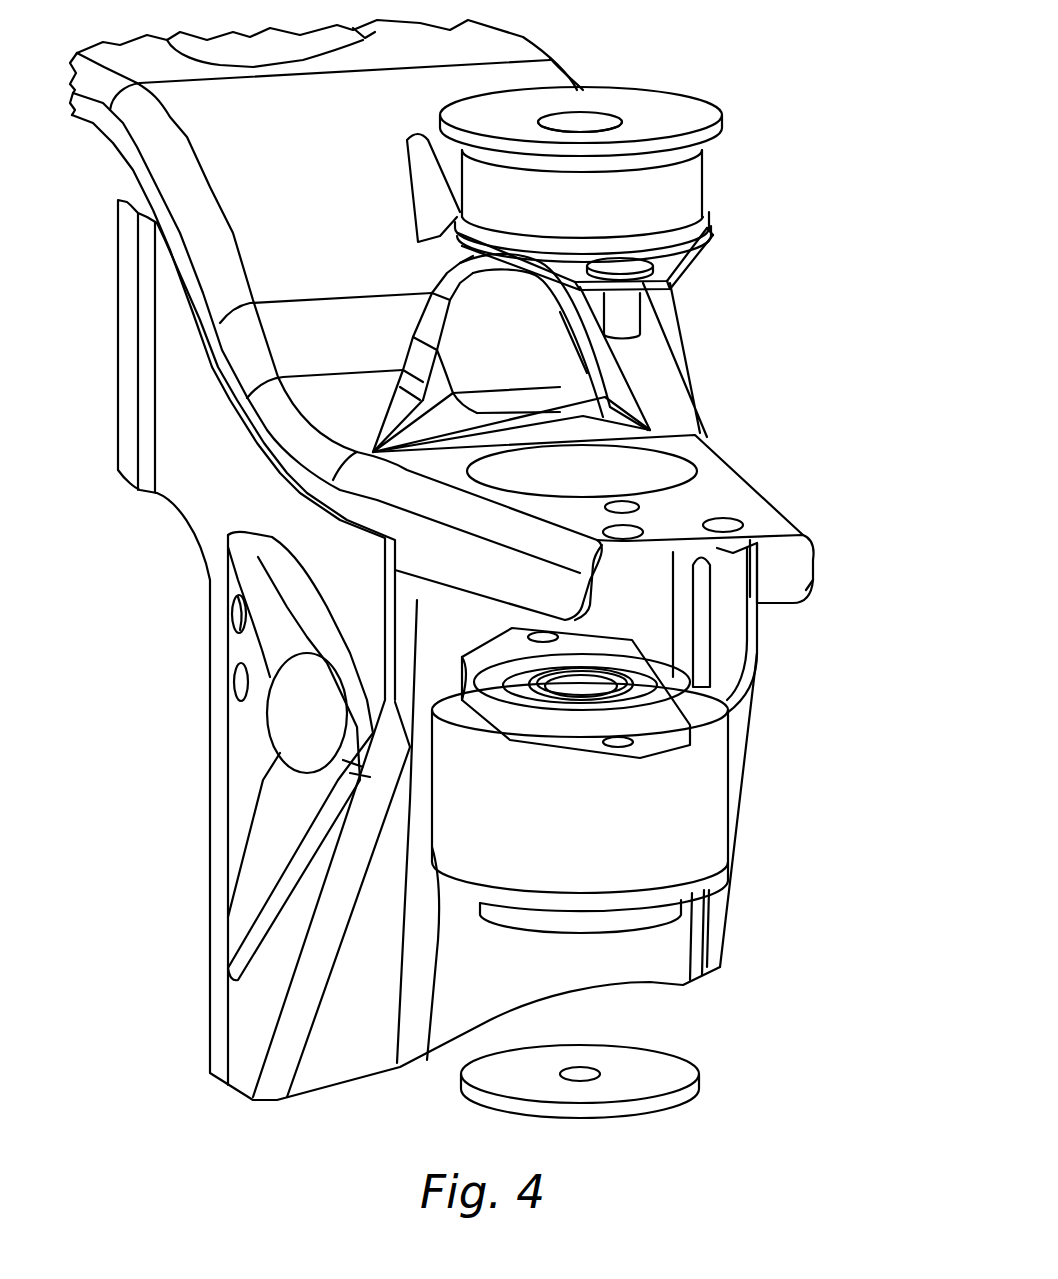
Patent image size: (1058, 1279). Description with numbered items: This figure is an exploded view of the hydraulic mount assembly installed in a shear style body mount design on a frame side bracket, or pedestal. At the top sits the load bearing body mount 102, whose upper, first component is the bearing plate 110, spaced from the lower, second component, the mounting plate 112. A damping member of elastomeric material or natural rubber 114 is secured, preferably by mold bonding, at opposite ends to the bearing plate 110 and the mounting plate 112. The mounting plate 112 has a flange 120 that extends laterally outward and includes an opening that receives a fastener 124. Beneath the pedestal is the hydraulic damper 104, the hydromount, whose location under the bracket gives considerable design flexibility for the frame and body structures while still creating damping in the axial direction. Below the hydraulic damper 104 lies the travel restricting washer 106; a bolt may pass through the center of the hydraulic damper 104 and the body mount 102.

The load bearing body mount 102 is at (750, 100).
The bearing plate 110 is at (652, 108).
The elastomeric material 114 is at (683, 190).
The mounting plate 112 is at (655, 243).
The first flange 120 is at (693, 254).
The fastener 124 is at (628, 318).
The hydraulic damper 104 is at (775, 728).
The travel restricting washer 106 is at (722, 1040).